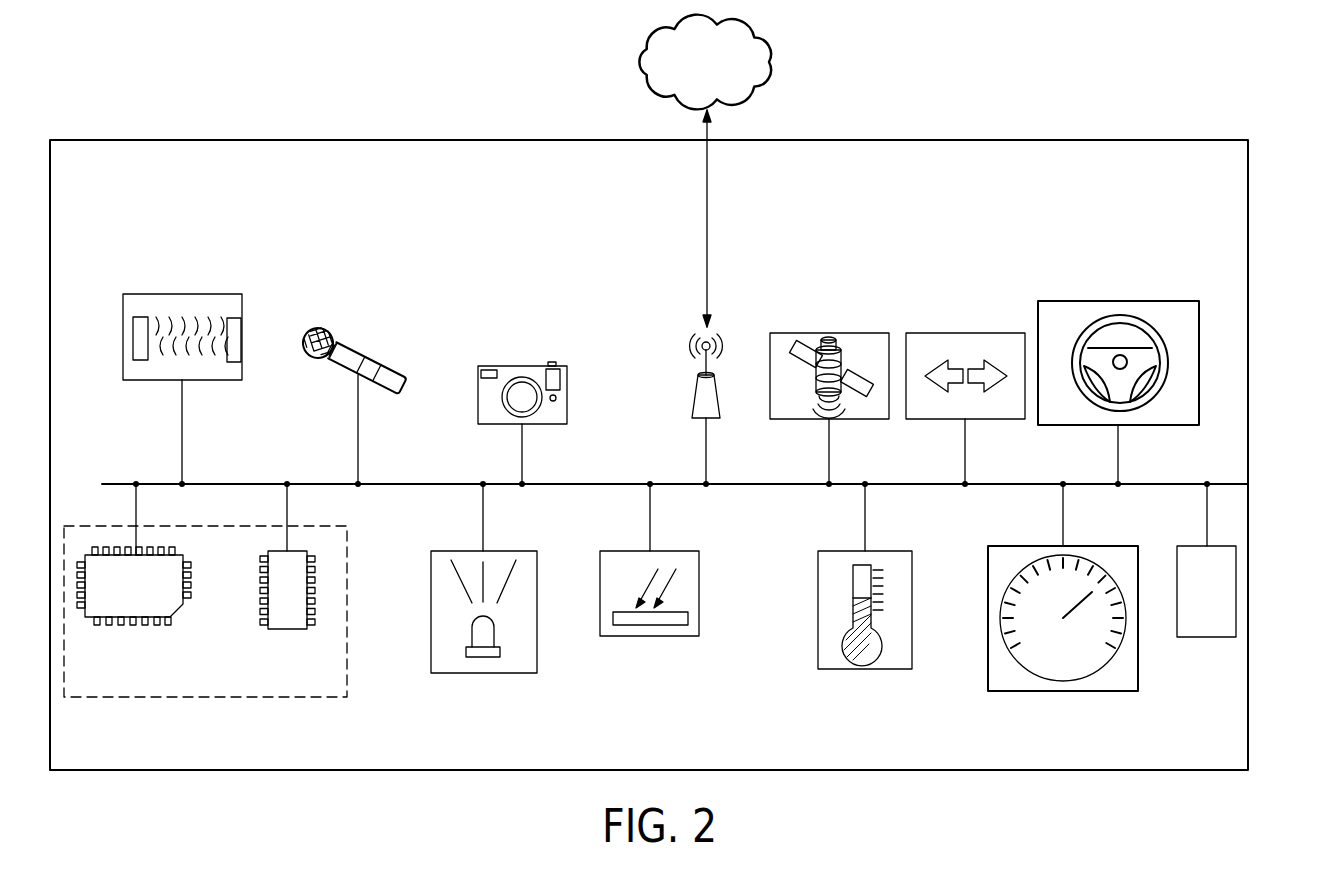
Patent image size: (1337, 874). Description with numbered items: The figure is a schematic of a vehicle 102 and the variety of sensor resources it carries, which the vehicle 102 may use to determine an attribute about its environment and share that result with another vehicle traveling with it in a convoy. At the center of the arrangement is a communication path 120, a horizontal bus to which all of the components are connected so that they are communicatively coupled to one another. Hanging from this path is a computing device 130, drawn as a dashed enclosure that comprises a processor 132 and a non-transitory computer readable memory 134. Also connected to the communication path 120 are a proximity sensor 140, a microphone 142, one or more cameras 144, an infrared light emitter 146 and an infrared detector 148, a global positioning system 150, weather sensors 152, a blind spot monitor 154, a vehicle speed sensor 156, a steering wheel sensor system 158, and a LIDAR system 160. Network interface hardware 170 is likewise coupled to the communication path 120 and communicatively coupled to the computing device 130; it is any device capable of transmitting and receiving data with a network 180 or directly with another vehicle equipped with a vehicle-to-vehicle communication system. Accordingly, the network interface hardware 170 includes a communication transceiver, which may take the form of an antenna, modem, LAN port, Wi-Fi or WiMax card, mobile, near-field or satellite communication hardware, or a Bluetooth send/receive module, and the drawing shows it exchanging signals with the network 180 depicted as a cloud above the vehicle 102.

The vehicle 102 is at (1248, 261).
The communication path 120 is at (117, 484).
The computing device 130 is at (347, 677).
The processor 132 is at (176, 612).
The non-transitory computer readable memory 134 is at (285, 629).
The proximity sensor 140 is at (183, 294).
The microphone 142 is at (358, 352).
The cameras 144 is at (524, 366).
The infrared light emitter 146 is at (480, 673).
The infrared detector 148 is at (649, 636).
The global positioning system (GPS) 150 is at (831, 333).
The weather sensors 152 is at (865, 669).
The blind spot monitor 154 is at (968, 333).
The vehicle speed sensor 156 is at (1063, 691).
The steering wheel sensor system 158 is at (1122, 301).
The LIDAR system 160 is at (1207, 637).
The network interface hardware 170 is at (702, 385).
The network 180 is at (636, 62).